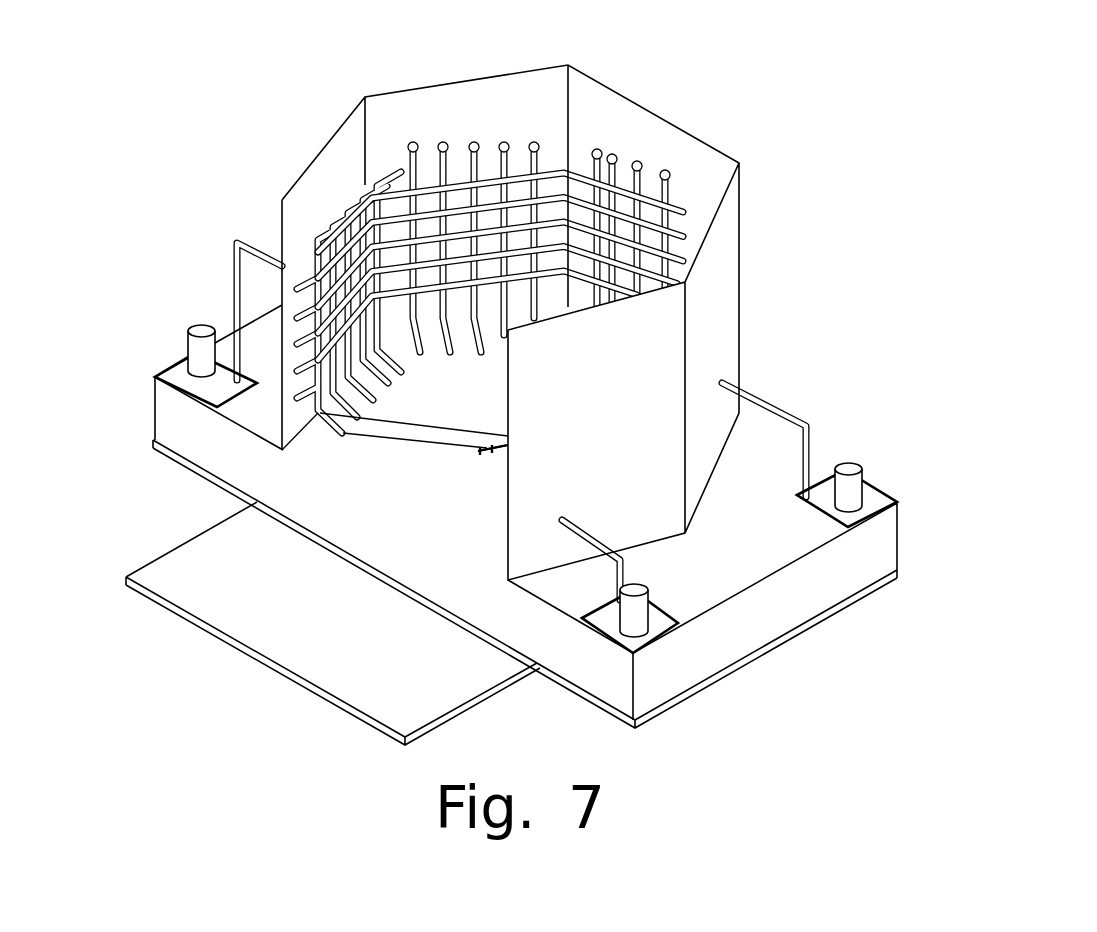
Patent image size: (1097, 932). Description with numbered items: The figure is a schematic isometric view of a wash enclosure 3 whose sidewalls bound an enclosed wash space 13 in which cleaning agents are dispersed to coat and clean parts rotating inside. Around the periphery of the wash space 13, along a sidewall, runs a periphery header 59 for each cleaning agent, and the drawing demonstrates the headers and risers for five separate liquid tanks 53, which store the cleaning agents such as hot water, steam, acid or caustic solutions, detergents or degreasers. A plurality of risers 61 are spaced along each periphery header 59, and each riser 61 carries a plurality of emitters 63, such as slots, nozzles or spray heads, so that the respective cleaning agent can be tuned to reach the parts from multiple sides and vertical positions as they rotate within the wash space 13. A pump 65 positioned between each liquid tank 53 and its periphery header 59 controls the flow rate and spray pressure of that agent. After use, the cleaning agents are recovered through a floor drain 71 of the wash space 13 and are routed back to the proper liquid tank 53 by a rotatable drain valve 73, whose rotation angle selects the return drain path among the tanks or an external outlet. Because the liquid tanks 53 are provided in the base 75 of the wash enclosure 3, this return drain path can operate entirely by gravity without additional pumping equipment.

The wash enclosure 3 is at (778, 198).
The wash space 13 is at (458, 385).
The liquid tank 53 is at (200, 440).
The periphery header 59 is at (548, 173).
The riser 61 is at (468, 166).
The emitter 63 is at (343, 433).
The pump 65 is at (200, 328).
The floor drain 71 is at (482, 452).
The rotatable drain valve 73 is at (482, 452).
The base 75 is at (742, 632).